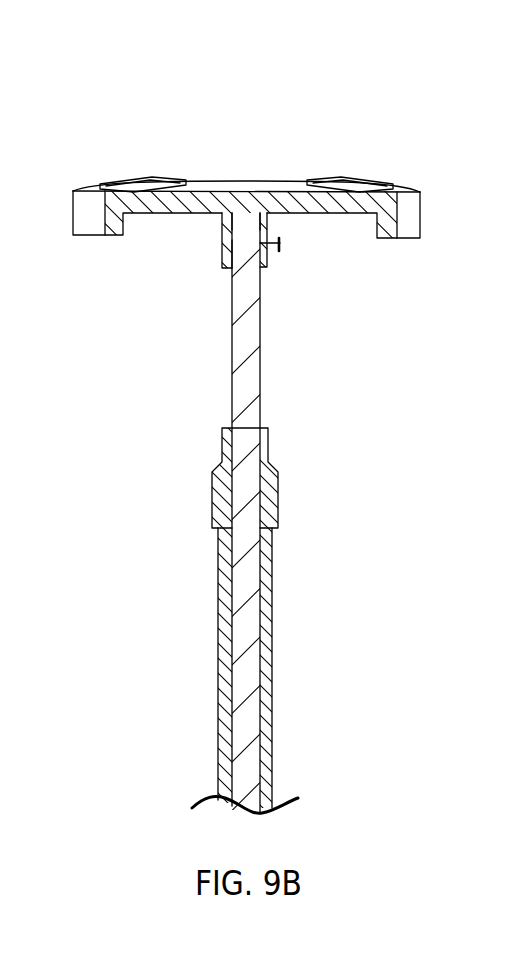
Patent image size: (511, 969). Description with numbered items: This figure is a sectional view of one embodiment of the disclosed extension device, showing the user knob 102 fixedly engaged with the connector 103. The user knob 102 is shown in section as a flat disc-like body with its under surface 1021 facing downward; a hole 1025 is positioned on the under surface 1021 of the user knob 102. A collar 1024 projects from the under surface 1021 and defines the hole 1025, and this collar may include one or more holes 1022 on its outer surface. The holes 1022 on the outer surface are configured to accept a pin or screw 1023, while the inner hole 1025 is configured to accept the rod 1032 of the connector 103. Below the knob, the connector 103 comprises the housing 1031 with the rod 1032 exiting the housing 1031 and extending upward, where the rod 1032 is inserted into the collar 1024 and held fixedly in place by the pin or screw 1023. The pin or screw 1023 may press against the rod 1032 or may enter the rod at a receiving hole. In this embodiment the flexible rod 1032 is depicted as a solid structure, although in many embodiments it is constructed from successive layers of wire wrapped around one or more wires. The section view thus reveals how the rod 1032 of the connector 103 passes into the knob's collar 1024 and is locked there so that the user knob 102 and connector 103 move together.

The user knob 102 is at (393, 146).
The under surface 1021 is at (152, 214).
The collar 1022 is at (263, 240).
The pin or screw 1023 is at (278, 244).
The collar 1024 is at (221, 237).
The hole 1025 is at (233, 253).
The connector 103 is at (343, 522).
The housing 1031 is at (272, 716).
The rod 1032 is at (261, 398).